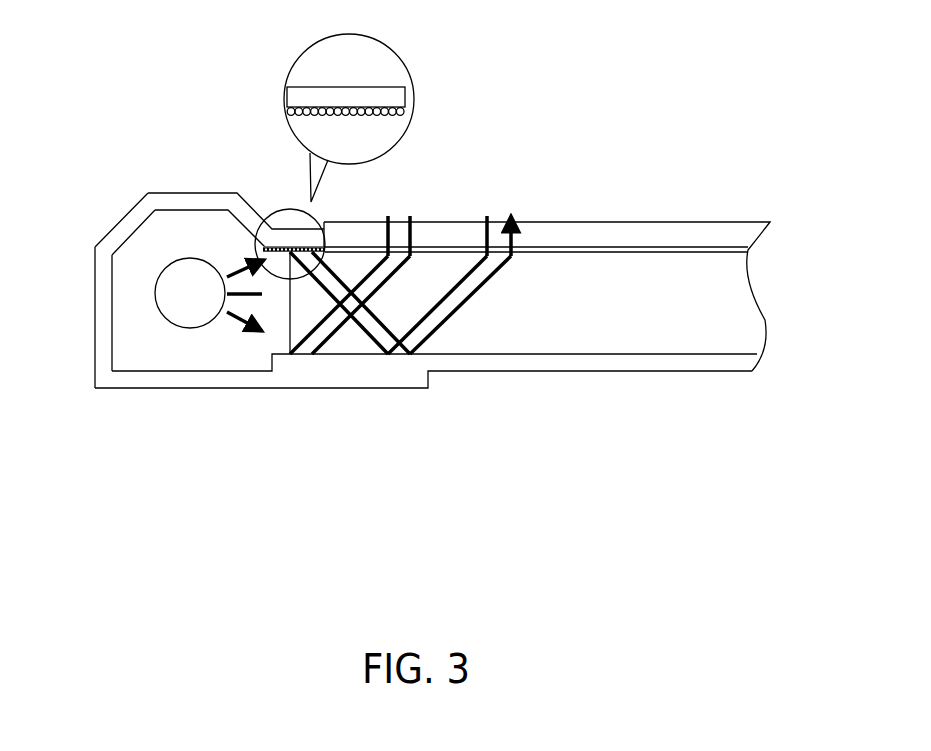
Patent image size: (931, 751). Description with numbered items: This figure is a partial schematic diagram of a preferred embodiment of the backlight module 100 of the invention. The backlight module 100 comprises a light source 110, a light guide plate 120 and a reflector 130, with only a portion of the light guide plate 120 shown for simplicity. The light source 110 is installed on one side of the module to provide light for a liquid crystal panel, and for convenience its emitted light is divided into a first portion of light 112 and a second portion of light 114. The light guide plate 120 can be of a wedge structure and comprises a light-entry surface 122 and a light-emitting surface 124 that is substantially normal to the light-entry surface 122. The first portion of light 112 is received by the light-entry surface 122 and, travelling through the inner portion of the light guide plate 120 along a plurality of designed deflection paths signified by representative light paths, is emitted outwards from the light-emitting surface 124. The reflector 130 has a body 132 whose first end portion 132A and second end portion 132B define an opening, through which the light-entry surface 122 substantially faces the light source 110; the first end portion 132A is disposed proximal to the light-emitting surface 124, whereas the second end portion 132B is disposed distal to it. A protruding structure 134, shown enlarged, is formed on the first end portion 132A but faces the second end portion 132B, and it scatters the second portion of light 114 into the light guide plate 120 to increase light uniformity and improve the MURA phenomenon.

The backlight module 100 is at (540, 437).
The light source 110 is at (165, 302).
The first portion of light 112 is at (236, 297).
The second portion of light 114 is at (239, 270).
The light guide plate 120 is at (735, 298).
The light-entry surface 122 is at (290, 303).
The light-emitting surface 124 is at (610, 250).
The reflector 130 is at (122, 228).
The body 132 is at (155, 201).
The first end portion 132A is at (373, 97).
The second end portion 132B is at (314, 380).
The protruding structure 134 is at (370, 113).